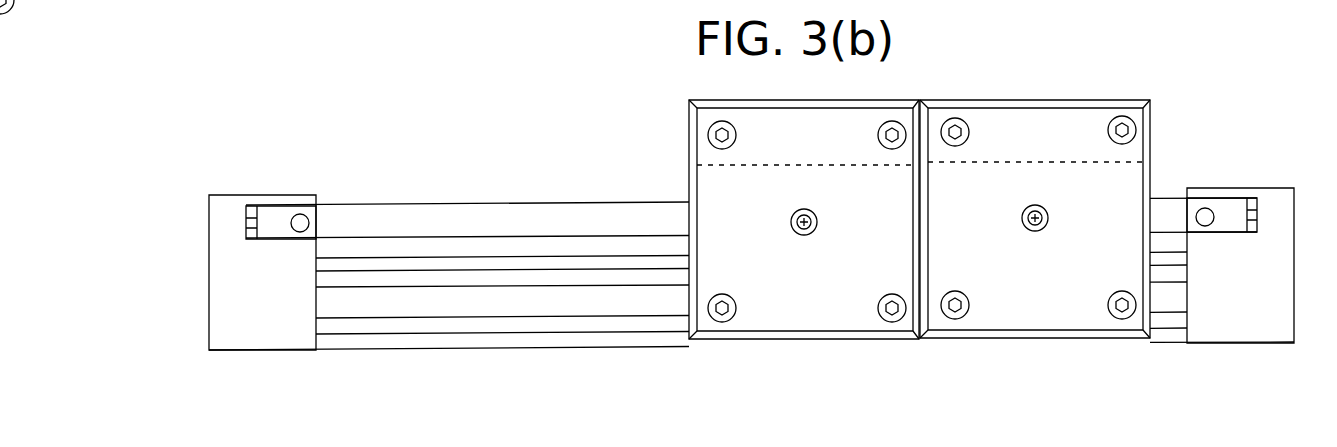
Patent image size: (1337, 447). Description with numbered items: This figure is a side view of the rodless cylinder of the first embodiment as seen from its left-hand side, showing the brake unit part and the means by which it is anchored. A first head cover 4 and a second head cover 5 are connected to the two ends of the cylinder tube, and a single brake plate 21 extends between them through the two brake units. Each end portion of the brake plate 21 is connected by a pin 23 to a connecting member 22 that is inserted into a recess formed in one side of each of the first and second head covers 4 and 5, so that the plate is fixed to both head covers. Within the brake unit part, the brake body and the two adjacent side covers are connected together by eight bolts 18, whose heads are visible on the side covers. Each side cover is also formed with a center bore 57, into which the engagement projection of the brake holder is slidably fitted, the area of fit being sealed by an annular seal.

The first head cover 4 is at (1262, 333).
The second head cover 5 is at (238, 334).
The bolts 18 is at (736, 134).
The brake plate 21 is at (418, 217).
The connecting member 22 is at (270, 213).
The pin 23 is at (303, 220).
The center bore 57 is at (817, 223).